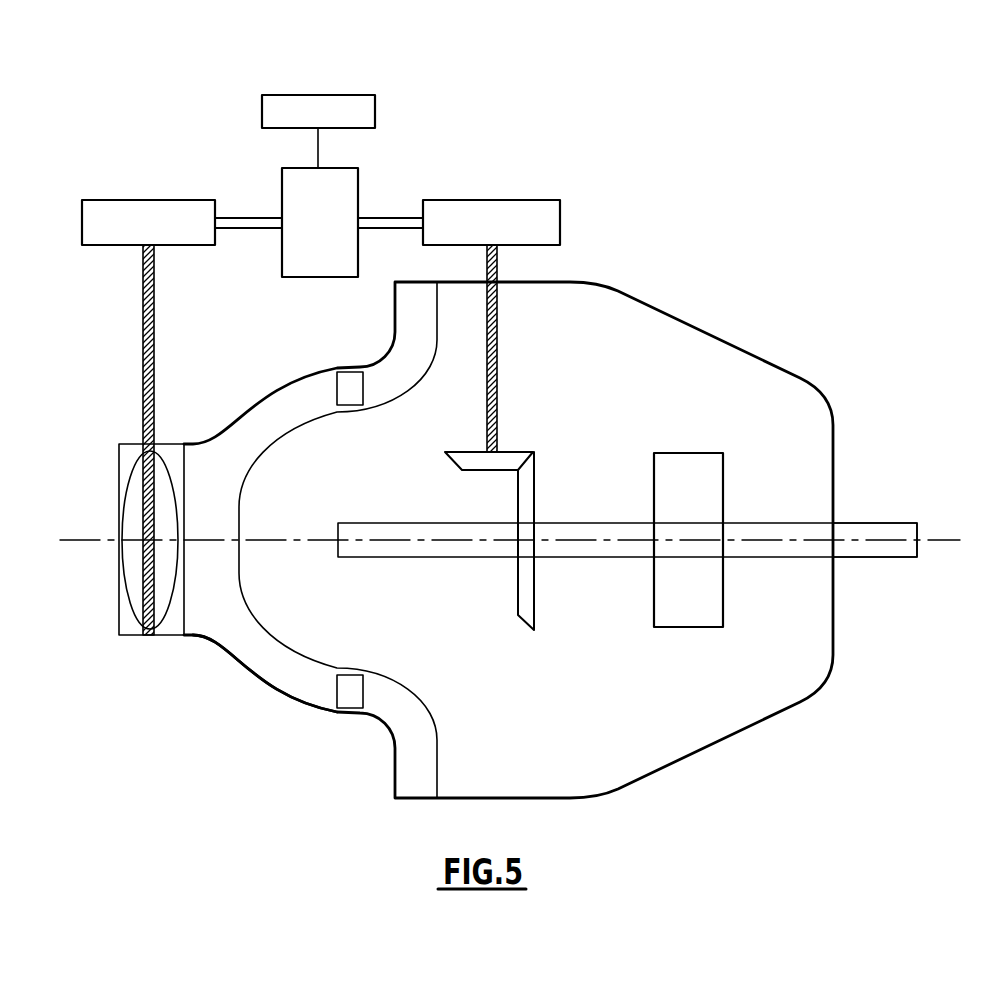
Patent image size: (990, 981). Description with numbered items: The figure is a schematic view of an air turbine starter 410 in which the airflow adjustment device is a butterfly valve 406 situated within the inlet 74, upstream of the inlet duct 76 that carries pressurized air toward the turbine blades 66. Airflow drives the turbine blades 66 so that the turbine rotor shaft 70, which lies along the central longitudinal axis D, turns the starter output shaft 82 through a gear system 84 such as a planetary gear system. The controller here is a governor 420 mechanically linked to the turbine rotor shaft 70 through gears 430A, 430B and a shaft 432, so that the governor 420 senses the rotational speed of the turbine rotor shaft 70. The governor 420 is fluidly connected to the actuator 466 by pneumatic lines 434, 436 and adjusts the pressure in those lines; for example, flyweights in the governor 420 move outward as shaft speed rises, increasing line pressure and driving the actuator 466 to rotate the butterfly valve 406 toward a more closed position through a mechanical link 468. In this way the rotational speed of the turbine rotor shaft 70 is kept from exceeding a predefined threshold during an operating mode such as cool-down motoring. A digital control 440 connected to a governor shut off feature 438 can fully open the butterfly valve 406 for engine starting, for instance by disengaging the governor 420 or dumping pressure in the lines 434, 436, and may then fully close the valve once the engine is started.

The air turbine starter 410 is at (852, 238).
The digital control 440 is at (335, 95).
The governor shut off feature 438 is at (297, 268).
The actuator 466 is at (137, 200).
The pneumatic line 436 is at (225, 213).
The pneumatic line 434 is at (375, 215).
The governor 420 is at (518, 200).
The shaft 432 is at (497, 350).
The mechanical link 468 is at (143, 332).
The inlet 74 is at (112, 486).
The butterfly valve 406 is at (132, 592).
The inlet duct 76 is at (223, 628).
The turbine blades 66 is at (350, 380).
The turbine rotor shaft 70 is at (577, 530).
The starter output shaft 82 is at (902, 528).
The central longitudinal axis D is at (965, 541).
The gear system 84 is at (693, 462).
The gear 430B is at (513, 458).
The gear 430A is at (530, 480).